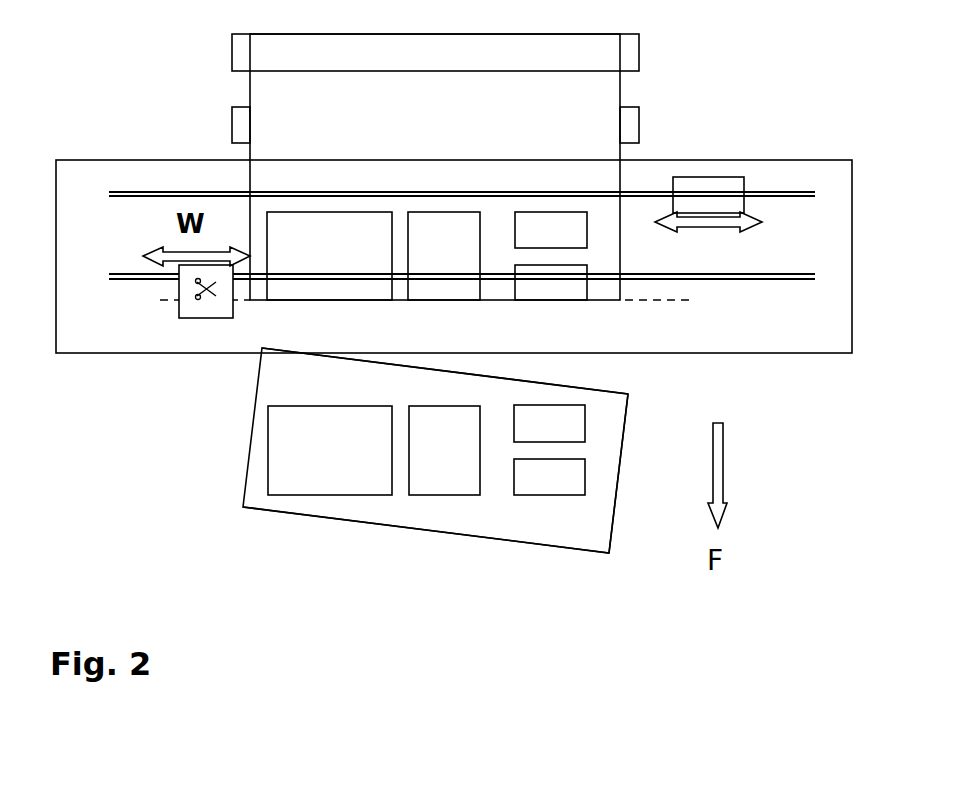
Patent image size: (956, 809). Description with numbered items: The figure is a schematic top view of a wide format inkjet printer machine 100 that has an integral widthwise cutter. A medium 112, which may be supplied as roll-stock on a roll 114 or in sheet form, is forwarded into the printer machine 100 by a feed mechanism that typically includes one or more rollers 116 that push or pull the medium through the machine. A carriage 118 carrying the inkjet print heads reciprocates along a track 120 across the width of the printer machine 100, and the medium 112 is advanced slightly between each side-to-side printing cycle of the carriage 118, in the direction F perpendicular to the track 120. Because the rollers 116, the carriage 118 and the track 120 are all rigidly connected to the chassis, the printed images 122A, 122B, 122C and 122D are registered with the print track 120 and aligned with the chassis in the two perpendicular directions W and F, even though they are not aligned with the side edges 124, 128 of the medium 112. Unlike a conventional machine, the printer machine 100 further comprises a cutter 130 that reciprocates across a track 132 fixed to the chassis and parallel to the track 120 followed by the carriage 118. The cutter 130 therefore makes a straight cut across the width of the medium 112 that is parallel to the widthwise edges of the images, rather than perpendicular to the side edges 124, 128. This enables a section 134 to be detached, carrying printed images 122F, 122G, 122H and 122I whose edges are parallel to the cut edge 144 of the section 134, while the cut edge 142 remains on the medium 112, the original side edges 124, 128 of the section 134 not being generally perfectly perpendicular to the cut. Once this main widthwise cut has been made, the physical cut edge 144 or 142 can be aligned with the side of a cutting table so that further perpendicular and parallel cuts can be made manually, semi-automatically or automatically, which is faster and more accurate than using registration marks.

The printer machine 100 is at (750, 356).
The medium 112 is at (458, 139).
The roll 114 is at (601, 38).
The rollers 116 is at (640, 106).
The carriage 118 is at (708, 178).
The track 120 is at (762, 192).
The printed image 122A is at (329, 256).
The printed image 122B is at (444, 256).
The printed image 122C is at (551, 230).
The printed image 122D is at (551, 282).
The printed image 122F is at (330, 450).
The printed image 122G is at (444, 450).
The printed image 122H is at (549, 423).
The printed image 122I is at (549, 477).
The side edge of medium 124 is at (245, 412).
The side edge of medium 128 is at (625, 470).
The cutter 130 is at (180, 293).
The track 132 is at (742, 283).
The section 134 is at (523, 527).
The cut edge 142 is at (560, 372).
The cut edge 144 is at (402, 529).